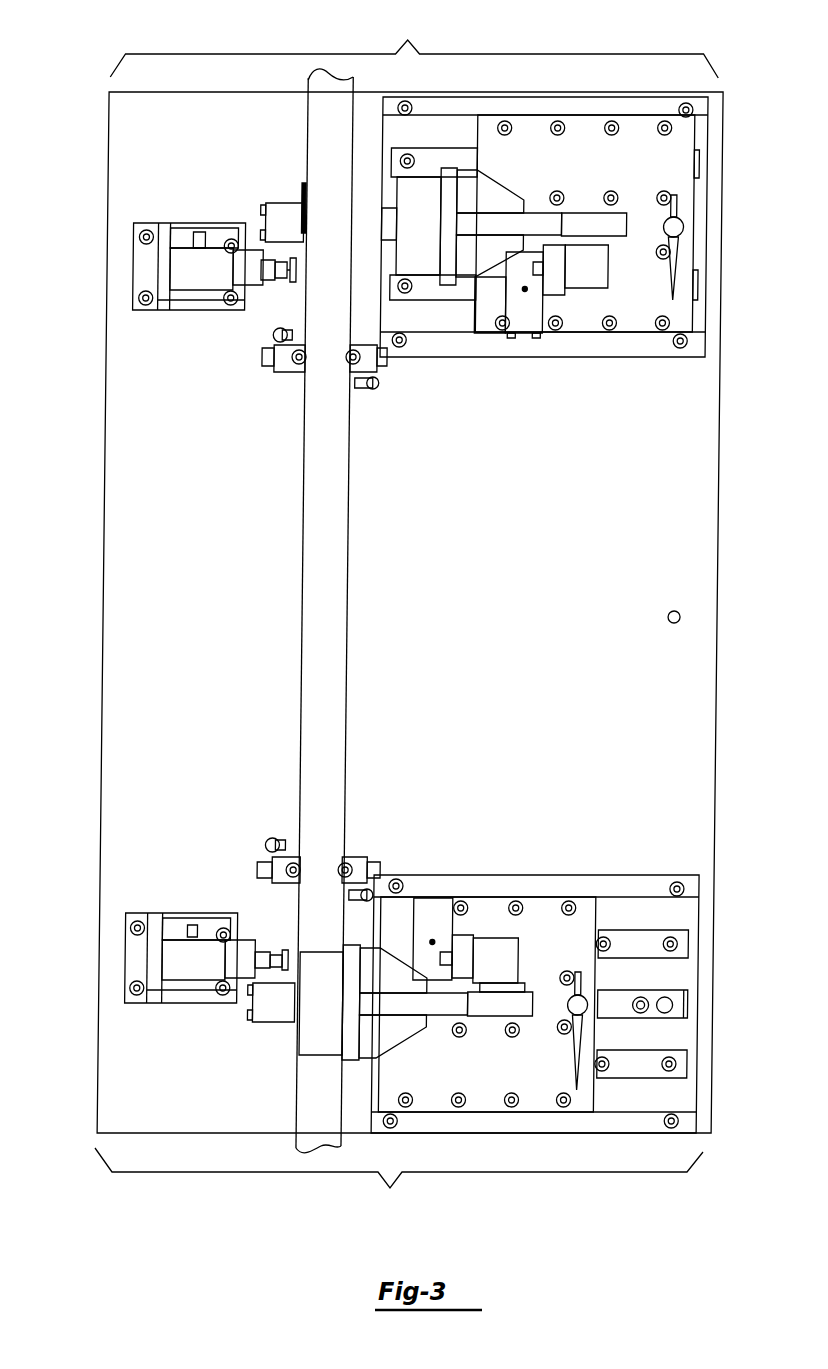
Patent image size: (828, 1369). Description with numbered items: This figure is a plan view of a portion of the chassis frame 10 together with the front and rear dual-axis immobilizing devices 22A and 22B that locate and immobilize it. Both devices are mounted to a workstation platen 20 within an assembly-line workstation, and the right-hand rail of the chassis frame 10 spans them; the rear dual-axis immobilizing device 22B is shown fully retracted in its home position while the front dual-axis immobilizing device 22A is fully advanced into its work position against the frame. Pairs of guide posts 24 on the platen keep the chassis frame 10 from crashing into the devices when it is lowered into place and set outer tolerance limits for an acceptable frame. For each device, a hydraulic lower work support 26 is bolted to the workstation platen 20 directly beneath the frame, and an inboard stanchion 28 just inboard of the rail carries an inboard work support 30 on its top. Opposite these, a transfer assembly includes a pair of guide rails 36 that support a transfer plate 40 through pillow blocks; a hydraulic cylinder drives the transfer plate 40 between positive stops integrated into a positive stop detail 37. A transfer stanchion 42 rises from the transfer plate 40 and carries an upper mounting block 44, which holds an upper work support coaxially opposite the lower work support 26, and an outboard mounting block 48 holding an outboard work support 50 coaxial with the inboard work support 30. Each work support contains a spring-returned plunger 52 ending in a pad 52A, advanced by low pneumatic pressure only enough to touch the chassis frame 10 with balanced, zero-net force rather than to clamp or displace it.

The chassis frame 10 is at (327, 553).
The workstation platen 20 is at (178, 660).
The front dual-axis immobilizing device 22A is at (399, 1188).
The rear dual-axis immobilizing device 22B is at (414, 43).
The guide posts 24 is at (358, 383).
The lower work support 26 is at (290, 203).
The inboard stanchion 28 is at (135, 267).
The inboard work support 30 is at (200, 287).
The guide rails 36 is at (698, 943).
The positive stop detail 37 is at (698, 1003).
The transfer plate 40 is at (584, 174).
The transfer stanchion 42 is at (580, 213).
The upper mounting block 44 is at (429, 234).
The outboard mounting block 48 is at (601, 279).
The outboard work support 50 is at (527, 307).
The plunger 52 is at (274, 258).
The pad 52A is at (292, 278).